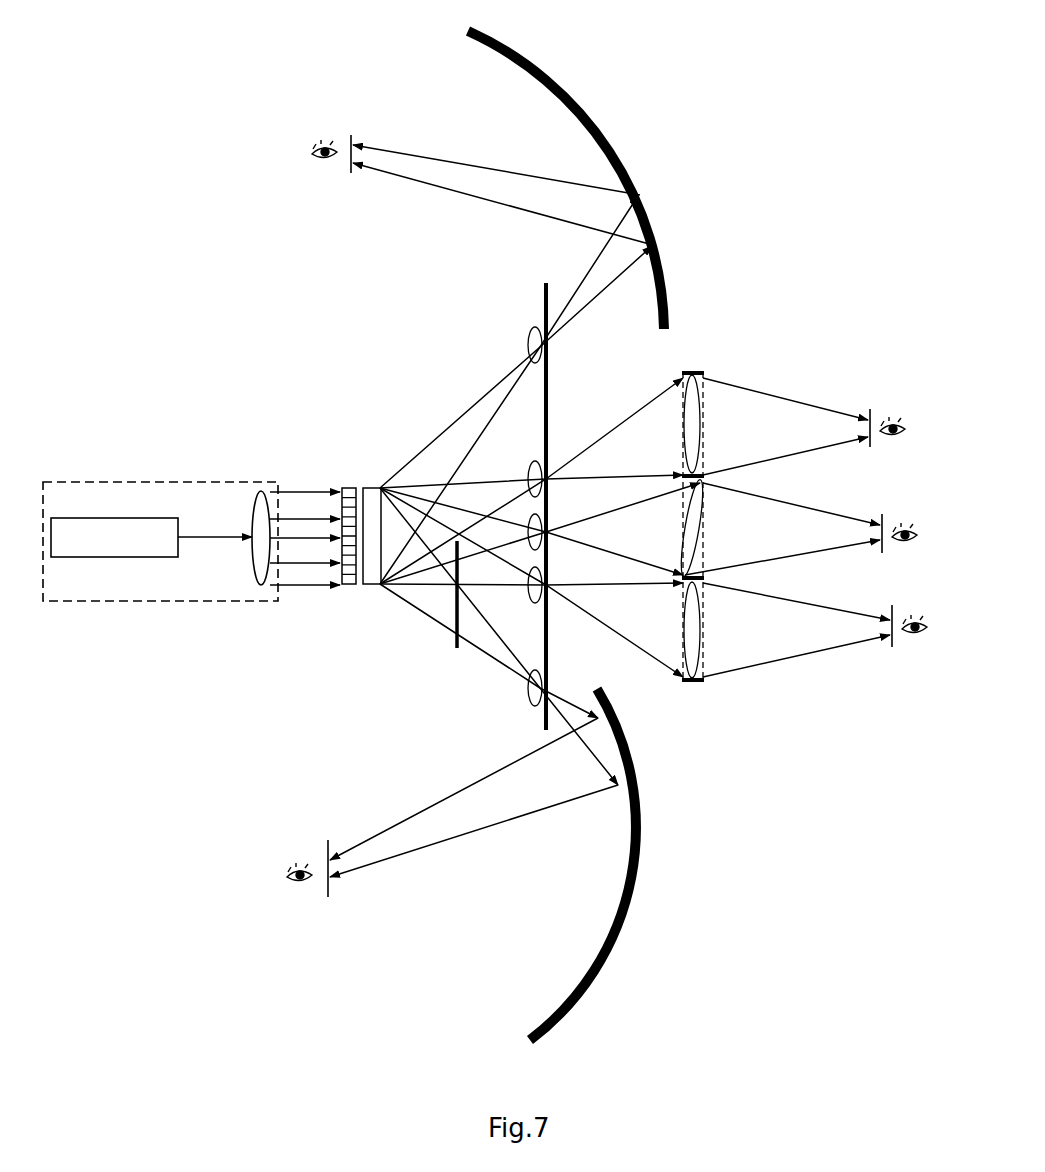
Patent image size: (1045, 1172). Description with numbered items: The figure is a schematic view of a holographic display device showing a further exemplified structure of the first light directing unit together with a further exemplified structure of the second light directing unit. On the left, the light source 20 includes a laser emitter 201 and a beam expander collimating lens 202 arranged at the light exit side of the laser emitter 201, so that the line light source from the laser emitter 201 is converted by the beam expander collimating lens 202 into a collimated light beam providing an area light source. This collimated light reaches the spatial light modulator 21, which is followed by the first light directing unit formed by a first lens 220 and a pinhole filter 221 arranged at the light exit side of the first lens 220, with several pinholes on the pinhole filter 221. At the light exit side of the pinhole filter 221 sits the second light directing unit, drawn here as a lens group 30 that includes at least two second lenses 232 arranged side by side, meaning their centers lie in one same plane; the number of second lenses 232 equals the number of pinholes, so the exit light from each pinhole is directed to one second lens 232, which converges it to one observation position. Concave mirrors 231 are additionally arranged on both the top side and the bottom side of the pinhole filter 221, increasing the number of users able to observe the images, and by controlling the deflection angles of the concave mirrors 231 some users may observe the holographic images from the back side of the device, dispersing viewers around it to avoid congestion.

The light source 20 is at (165, 580).
The laser emitter 201 is at (108, 527).
The beam expander collimating lens 202 is at (265, 568).
The spatial light modulator 21 is at (345, 530).
The first lens 220 is at (372, 495).
The pinhole filter 221 is at (545, 280).
The concave mirror 231 is at (645, 173).
The lens group 30 is at (730, 530).
The second lens 232 is at (695, 635).